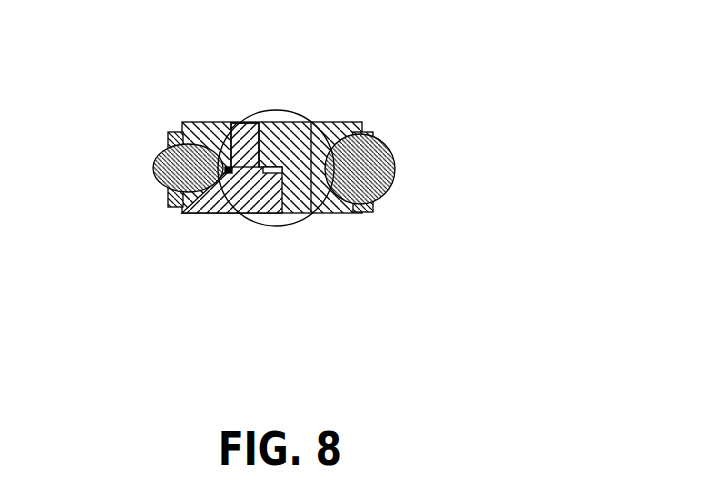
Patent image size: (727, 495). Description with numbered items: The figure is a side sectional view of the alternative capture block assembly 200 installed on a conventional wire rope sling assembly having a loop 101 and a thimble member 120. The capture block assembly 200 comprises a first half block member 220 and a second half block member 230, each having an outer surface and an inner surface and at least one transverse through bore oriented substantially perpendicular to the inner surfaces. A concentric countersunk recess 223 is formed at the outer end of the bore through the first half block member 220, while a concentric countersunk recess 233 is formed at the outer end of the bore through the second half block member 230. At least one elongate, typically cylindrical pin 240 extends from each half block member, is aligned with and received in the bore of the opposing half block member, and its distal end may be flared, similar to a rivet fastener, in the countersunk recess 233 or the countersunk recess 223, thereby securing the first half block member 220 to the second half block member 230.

The alternative capture block assembly 200 is at (330, 162).
The first half block member 220 is at (320, 127).
The concentric countersunk recess 223 is at (248, 127).
The second half block member 230 is at (203, 210).
The concentric countersunk recess 233 is at (283, 193).
The elongate pin 240 is at (227, 127).
The thimble member 120 is at (173, 132).
The loop 101 is at (155, 173).